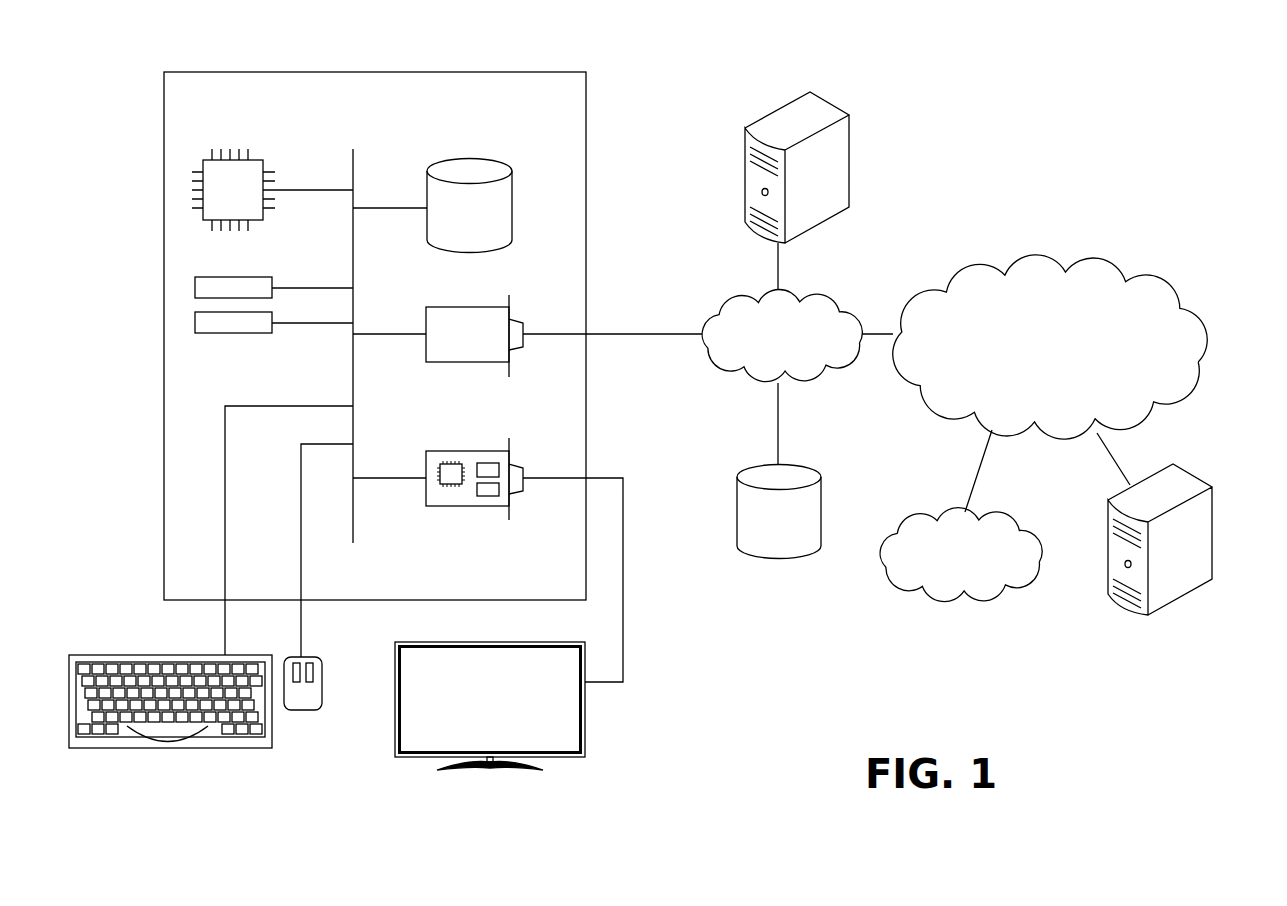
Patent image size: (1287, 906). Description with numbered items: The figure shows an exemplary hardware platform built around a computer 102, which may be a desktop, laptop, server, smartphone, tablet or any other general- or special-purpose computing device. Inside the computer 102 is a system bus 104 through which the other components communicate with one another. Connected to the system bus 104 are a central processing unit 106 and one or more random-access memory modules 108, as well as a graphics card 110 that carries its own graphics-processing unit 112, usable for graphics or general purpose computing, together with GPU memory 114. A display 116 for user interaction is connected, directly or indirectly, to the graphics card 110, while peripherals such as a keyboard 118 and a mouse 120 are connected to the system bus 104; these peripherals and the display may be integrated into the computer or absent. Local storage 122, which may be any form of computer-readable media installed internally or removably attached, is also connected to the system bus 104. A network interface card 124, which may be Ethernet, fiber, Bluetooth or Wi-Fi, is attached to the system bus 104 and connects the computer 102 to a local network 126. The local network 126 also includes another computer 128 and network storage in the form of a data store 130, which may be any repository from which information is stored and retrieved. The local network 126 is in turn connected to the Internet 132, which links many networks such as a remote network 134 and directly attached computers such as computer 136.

The computer 102 is at (540, 72).
The system bus 104 is at (355, 160).
The central processing unit (CPU) 106 is at (258, 157).
The memory modules 108 is at (273, 317).
The graphics card 110 is at (426, 463).
The graphics-processing unit (GPU) 112 is at (450, 485).
The GPU memory 114 is at (487, 498).
The display 116 is at (585, 735).
The keyboard 118 is at (173, 750).
The mouse 120 is at (300, 713).
The local storage 122 is at (513, 190).
The network interface card (NIC) 124 is at (426, 318).
The local network 126 is at (830, 293).
The computer 128 is at (833, 103).
The data store 130 is at (812, 470).
The Internet 132 is at (1097, 253).
The remote network 134 is at (1013, 512).
The computer 136 is at (1188, 468).